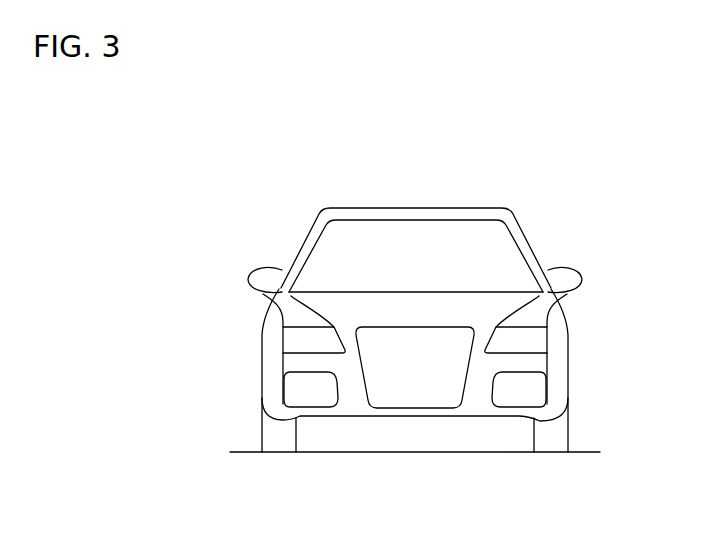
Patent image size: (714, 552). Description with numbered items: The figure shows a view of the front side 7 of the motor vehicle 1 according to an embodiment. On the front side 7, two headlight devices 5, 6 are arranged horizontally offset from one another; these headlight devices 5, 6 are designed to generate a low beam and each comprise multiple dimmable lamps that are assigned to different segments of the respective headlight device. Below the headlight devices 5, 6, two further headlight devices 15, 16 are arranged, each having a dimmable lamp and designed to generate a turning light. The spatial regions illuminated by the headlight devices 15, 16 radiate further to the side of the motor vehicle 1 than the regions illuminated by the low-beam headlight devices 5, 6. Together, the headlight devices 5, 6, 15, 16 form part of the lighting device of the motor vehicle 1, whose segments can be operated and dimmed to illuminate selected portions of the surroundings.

The motor vehicle 1 is at (413, 345).
The headlight device 5 is at (532, 348).
The headlight device 6 is at (285, 340).
The front side 7 is at (472, 393).
The headlight device 15 is at (532, 398).
The headlight device 16 is at (288, 396).